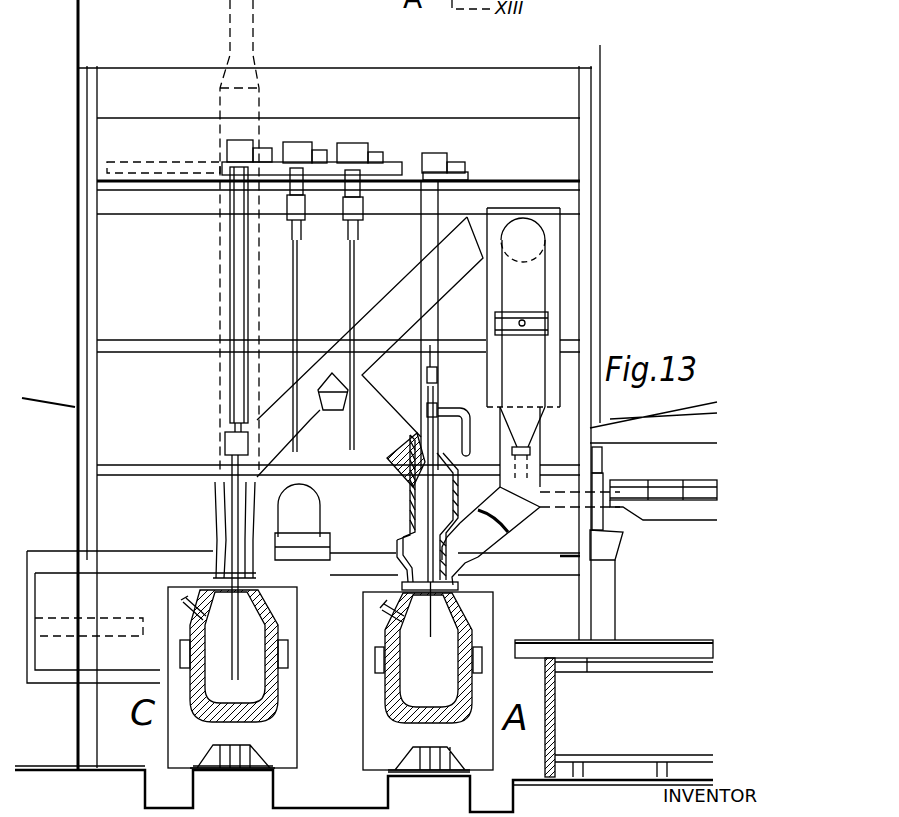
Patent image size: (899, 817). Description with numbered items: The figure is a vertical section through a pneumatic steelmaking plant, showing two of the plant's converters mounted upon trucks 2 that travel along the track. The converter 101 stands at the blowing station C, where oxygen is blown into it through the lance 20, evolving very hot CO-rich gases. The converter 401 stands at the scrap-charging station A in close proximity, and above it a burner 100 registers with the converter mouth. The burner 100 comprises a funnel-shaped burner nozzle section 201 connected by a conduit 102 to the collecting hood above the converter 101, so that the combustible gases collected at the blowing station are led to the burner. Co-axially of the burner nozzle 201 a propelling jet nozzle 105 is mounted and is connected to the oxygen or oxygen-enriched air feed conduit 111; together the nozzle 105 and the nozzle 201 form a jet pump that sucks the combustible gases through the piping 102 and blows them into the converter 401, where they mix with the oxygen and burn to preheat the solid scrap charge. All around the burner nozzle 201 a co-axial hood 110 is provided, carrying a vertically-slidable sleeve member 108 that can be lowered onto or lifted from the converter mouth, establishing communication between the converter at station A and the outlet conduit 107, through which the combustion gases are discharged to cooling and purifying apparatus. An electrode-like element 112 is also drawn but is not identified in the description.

The truck 2 is at (188, 752).
The lance 20 is at (232, 537).
The burner 100 is at (473, 575).
The converter 101 is at (197, 703).
The conduit 102 is at (307, 418).
The propelling jet nozzle 105 is at (408, 537).
The outlet conduit 107 is at (503, 538).
The vertically-slidable sleeve member 108 is at (400, 587).
The hood 110 is at (400, 560).
The oxygen or oxygen-enriched air feed conduit 111 is at (430, 517).
The electrode 112 is at (430, 615).
The funnel-shaped section 201 is at (480, 557).
The converter 401 is at (385, 695).